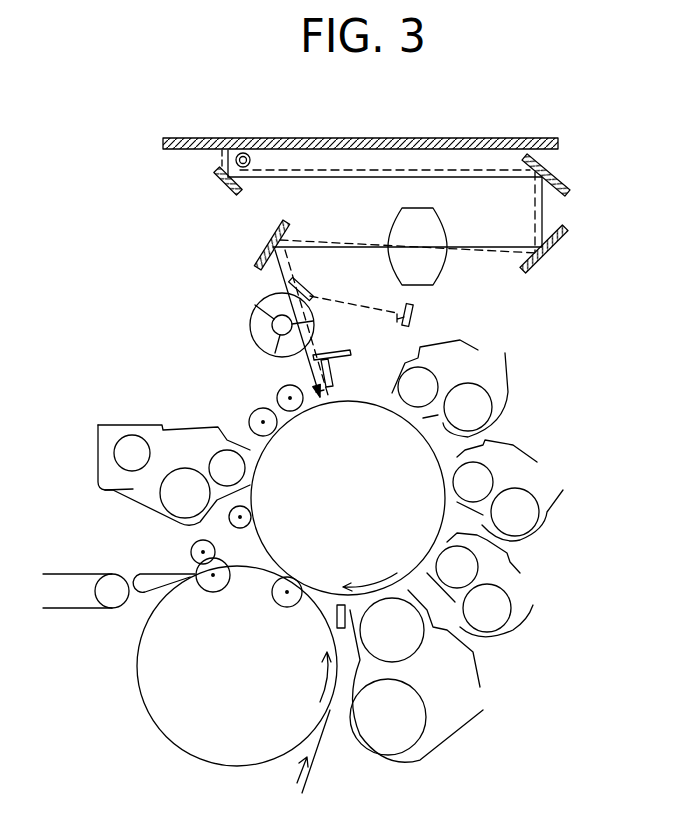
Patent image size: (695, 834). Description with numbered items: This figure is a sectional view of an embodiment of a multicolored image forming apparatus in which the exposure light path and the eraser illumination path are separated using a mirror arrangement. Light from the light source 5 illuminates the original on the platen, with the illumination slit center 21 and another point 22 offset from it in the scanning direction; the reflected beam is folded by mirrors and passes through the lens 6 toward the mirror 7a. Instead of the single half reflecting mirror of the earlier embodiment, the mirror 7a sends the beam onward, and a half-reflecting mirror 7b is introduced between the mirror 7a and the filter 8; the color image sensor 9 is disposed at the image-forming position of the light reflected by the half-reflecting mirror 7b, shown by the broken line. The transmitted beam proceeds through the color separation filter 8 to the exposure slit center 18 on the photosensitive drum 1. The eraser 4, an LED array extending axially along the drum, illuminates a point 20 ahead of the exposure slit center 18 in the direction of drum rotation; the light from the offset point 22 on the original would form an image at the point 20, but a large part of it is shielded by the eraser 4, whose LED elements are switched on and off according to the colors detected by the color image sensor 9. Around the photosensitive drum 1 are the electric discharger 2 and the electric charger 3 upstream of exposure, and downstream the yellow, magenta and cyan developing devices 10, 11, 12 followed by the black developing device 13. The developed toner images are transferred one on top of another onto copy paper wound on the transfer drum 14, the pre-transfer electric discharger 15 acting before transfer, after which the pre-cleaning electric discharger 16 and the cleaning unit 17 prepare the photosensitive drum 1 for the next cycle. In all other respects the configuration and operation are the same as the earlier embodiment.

The photosensitive drum 1 is at (366, 487).
The electric discharger 2 is at (258, 414).
The electric charger 3 is at (278, 388).
The eraser 4 is at (350, 352).
The light source 5 is at (250, 160).
The lens 6 is at (433, 220).
The mirror 7a is at (260, 258).
The half-reflecting mirror 7b is at (312, 298).
The color separation filter 8 is at (250, 322).
The color image sensor 9 is at (413, 318).
The yellow developing device 10 is at (508, 388).
The magenta developing device 11 is at (550, 515).
The cyan developing device 12 is at (530, 607).
The black developing device 13 is at (453, 733).
The transfer drum 14 is at (272, 683).
The pre-transfer electric discharger 15 is at (341, 630).
The pre-cleaning electric discharger 16 is at (225, 520).
The cleaning unit 17 is at (133, 490).
The exposure slit center 18 is at (307, 422).
The illumination point 20 is at (316, 346).
The illumination slit center 21 is at (231, 149).
The point on original document 22 is at (220, 137).